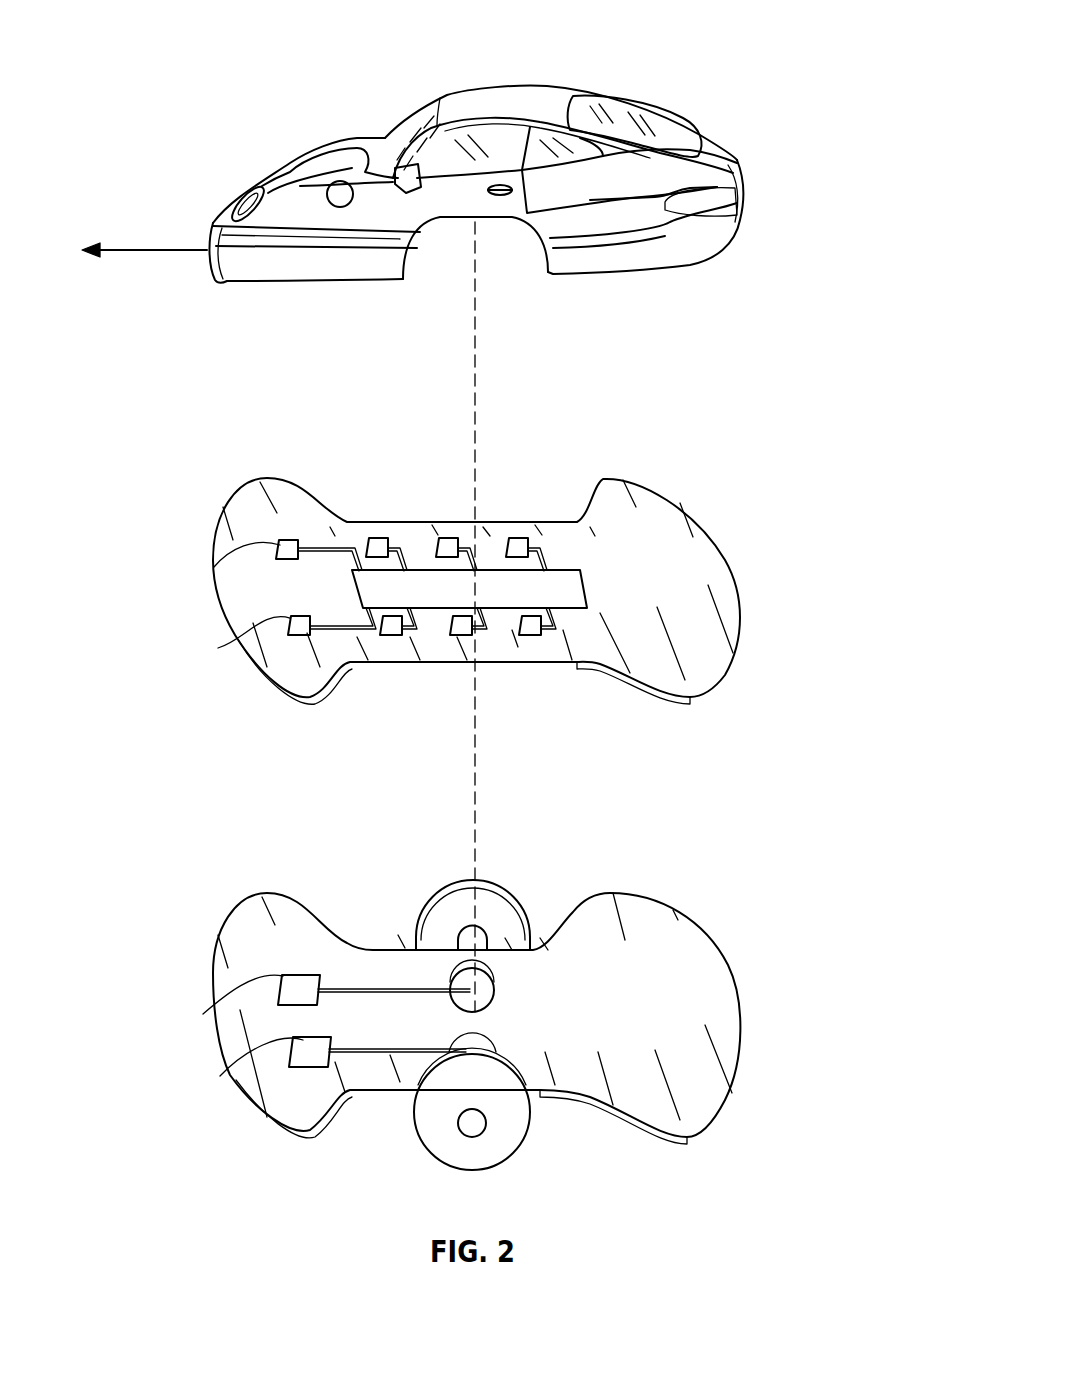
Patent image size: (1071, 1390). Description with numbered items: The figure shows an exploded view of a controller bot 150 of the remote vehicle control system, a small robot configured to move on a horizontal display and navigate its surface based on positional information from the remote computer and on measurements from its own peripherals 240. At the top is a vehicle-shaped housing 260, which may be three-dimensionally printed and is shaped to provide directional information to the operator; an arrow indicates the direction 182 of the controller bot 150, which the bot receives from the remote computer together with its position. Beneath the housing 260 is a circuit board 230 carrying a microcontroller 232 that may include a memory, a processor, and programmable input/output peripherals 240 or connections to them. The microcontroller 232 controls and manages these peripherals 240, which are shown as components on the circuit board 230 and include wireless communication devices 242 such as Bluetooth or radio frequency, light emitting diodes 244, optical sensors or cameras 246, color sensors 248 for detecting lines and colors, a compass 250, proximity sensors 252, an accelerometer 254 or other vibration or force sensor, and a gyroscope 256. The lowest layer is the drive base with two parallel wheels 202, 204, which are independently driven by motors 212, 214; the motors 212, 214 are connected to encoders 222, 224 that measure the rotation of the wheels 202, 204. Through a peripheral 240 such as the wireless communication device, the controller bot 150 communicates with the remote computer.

The controller bot 150 is at (670, 30).
The direction of the controller bot 182 is at (137, 247).
The vehicle-shaped housing 260 is at (708, 142).
The programmable input/output peripherals 240 is at (197, 429).
The circuit board 230 is at (718, 490).
The microcontroller 232 is at (587, 587).
The wireless communication devices 242 is at (214, 567).
The light emitting diodes 244 is at (378, 538).
The optical sensors or cameras 246 is at (447, 538).
The color sensors 248 is at (517, 538).
The compass 250 is at (218, 648).
The proximity sensors 252 is at (393, 636).
The accelerometer 254 is at (463, 636).
The gyroscope 256 is at (537, 636).
The wheel 202 is at (445, 887).
The wheel 204 is at (440, 1140).
The motor 212 is at (497, 983).
The motor 214 is at (487, 1047).
The encoder 222 is at (203, 1014).
The encoder 224 is at (220, 1076).